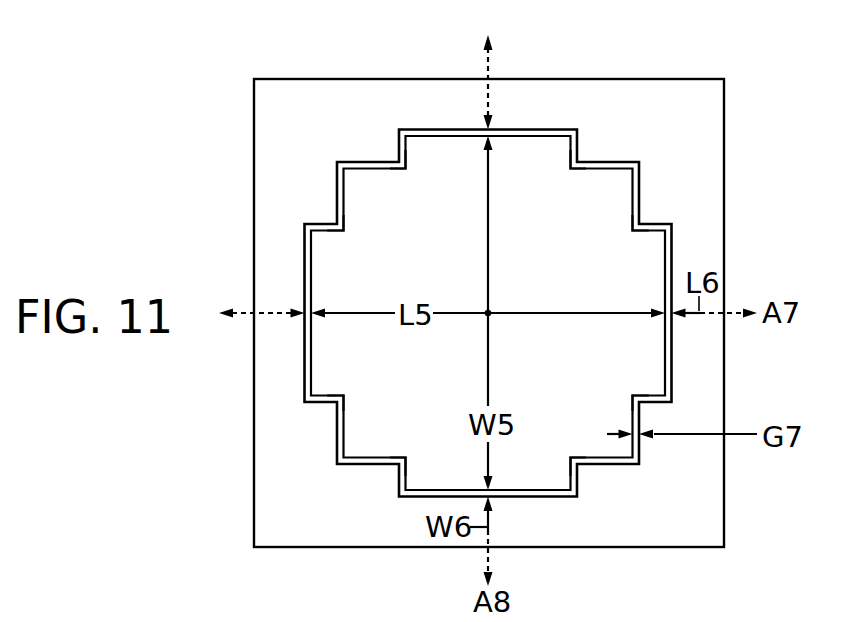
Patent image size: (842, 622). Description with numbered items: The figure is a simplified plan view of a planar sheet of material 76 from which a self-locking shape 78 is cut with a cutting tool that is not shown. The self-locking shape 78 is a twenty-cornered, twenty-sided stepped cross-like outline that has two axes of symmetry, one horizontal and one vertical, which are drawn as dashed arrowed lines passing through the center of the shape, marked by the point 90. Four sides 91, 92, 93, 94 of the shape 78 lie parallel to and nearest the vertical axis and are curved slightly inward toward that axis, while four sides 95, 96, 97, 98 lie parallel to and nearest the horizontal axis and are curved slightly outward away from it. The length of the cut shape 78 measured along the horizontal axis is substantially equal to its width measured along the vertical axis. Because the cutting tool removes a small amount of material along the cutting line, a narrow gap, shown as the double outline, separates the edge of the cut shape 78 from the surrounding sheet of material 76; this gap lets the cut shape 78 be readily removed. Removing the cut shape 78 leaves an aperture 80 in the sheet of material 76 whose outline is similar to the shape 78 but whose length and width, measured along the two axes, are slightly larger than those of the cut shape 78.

The planar sheet of material 76 is at (712, 114).
The self-locking shape 78 is at (623, 211).
The aperture 80 is at (337, 183).
The center point 90 is at (488, 313).
The side 91 is at (406, 150).
The side 92 is at (570, 152).
The side 93 is at (406, 473).
The side 94 is at (571, 473).
The side 95 is at (327, 230).
The side 96 is at (649, 230).
The side 97 is at (327, 396).
The side 98 is at (649, 396).